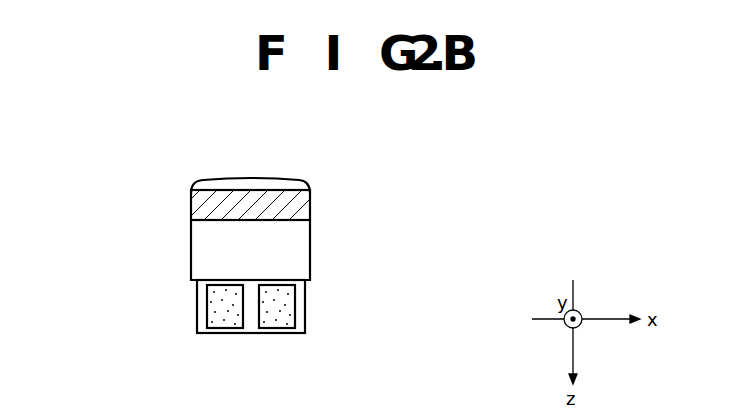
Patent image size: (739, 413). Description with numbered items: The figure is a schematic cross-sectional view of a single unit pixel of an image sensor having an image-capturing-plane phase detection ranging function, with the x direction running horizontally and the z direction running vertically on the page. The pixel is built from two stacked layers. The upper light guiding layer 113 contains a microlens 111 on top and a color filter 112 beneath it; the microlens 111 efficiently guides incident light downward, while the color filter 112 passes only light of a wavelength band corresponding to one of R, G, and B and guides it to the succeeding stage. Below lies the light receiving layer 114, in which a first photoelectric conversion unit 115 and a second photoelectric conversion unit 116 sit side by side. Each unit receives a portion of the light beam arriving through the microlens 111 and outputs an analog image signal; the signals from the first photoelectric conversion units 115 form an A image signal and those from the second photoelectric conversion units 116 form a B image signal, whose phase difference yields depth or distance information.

The microlens 111 is at (252, 178).
The color filter 112 is at (307, 198).
The light guiding layer 113 is at (166, 180).
The light receiving layer 114 is at (166, 282).
The first photoelectric conversion unit 115 is at (222, 329).
The second photoelectric conversion unit 116 is at (278, 329).